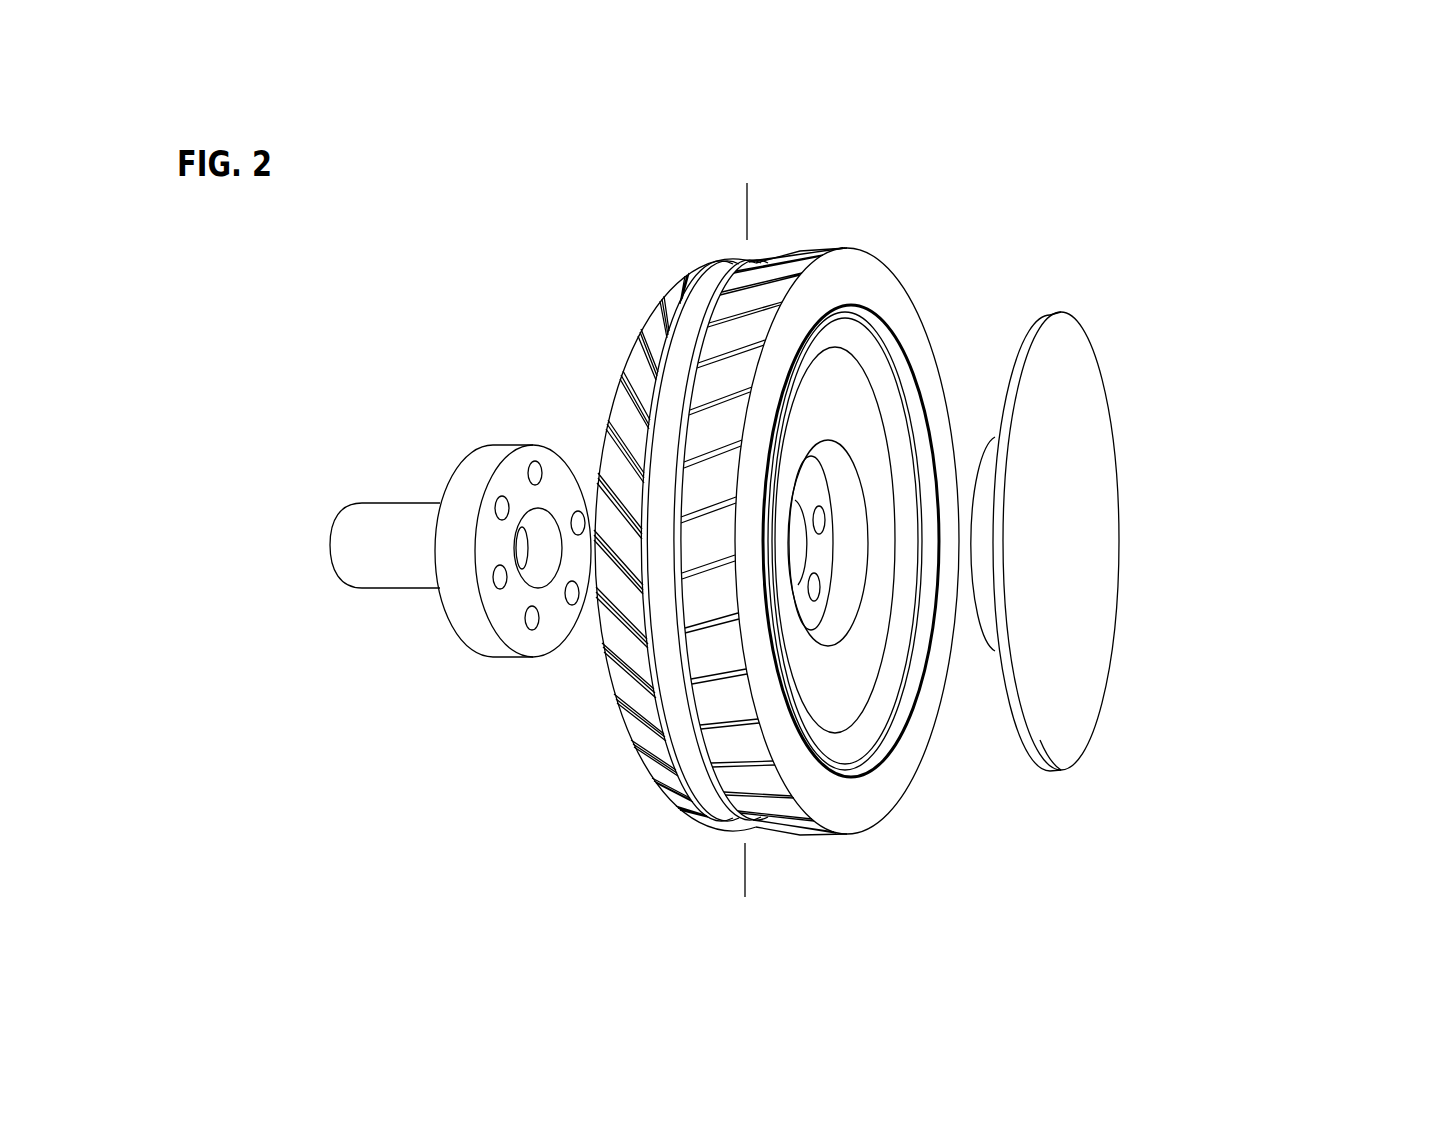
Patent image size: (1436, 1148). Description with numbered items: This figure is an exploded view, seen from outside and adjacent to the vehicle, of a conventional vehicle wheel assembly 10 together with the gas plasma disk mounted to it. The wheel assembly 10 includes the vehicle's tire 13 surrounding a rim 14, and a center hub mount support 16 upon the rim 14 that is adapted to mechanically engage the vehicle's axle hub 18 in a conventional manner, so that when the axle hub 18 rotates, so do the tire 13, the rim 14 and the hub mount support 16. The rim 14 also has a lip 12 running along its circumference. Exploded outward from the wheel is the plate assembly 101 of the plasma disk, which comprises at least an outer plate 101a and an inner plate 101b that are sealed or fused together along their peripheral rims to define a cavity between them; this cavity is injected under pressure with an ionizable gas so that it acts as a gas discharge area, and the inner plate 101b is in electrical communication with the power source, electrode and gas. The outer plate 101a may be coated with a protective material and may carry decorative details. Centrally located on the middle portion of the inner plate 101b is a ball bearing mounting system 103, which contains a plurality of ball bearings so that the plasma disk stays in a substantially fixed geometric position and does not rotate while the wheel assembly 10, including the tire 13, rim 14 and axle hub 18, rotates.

The wheel assembly 10 is at (1020, 150).
The lip 12 is at (848, 335).
The tire 13 is at (920, 337).
The rim 14 is at (838, 418).
The center hub mount support 16 is at (812, 547).
The axle hub 18 is at (540, 443).
The plate assembly 101 is at (1097, 335).
The outer plate 101a is at (1080, 548).
The inner plate 101b is at (997, 707).
The ball bearing mounting system 103 is at (985, 508).